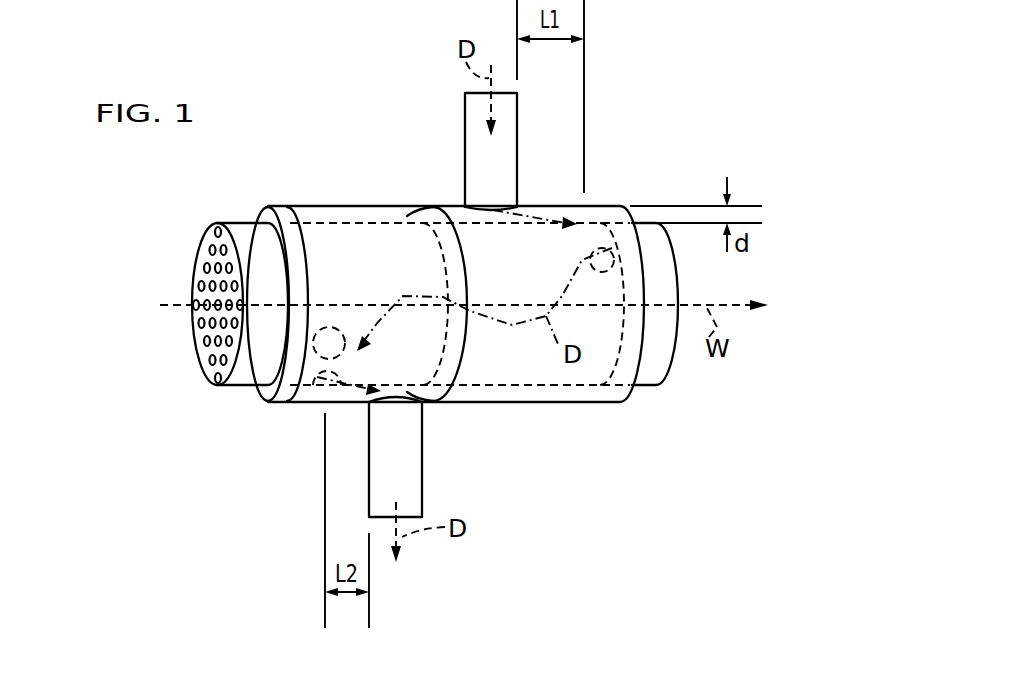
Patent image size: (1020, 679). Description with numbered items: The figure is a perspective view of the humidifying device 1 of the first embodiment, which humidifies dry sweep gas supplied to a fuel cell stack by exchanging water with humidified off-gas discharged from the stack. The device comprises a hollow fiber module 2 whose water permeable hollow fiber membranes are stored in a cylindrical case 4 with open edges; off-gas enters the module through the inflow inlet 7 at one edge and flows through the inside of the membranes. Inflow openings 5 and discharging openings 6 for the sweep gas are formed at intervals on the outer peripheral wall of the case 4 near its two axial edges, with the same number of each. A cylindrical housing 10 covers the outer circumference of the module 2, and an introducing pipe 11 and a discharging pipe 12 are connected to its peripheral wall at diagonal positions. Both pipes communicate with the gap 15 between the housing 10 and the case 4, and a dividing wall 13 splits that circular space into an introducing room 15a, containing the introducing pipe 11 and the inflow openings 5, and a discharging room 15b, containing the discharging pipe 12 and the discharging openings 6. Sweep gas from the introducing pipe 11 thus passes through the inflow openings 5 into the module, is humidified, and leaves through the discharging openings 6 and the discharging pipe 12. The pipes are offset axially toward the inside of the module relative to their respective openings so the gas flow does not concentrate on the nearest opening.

The humidifying device 1 is at (432, 298).
The hollow fiber module 2 is at (318, 216).
The case 4 is at (241, 390).
The inflow openings 5 is at (624, 222).
The discharging openings 6 is at (323, 385).
The inflow inlet 7 is at (212, 361).
The housing 10 is at (587, 403).
The introducing pipe 11 is at (465, 183).
The discharging pipe 12 is at (422, 458).
The dividing wall 13 is at (462, 247).
The gap 15 is at (543, 395).
The introducing room 15a is at (557, 204).
The discharging room 15b is at (373, 203).